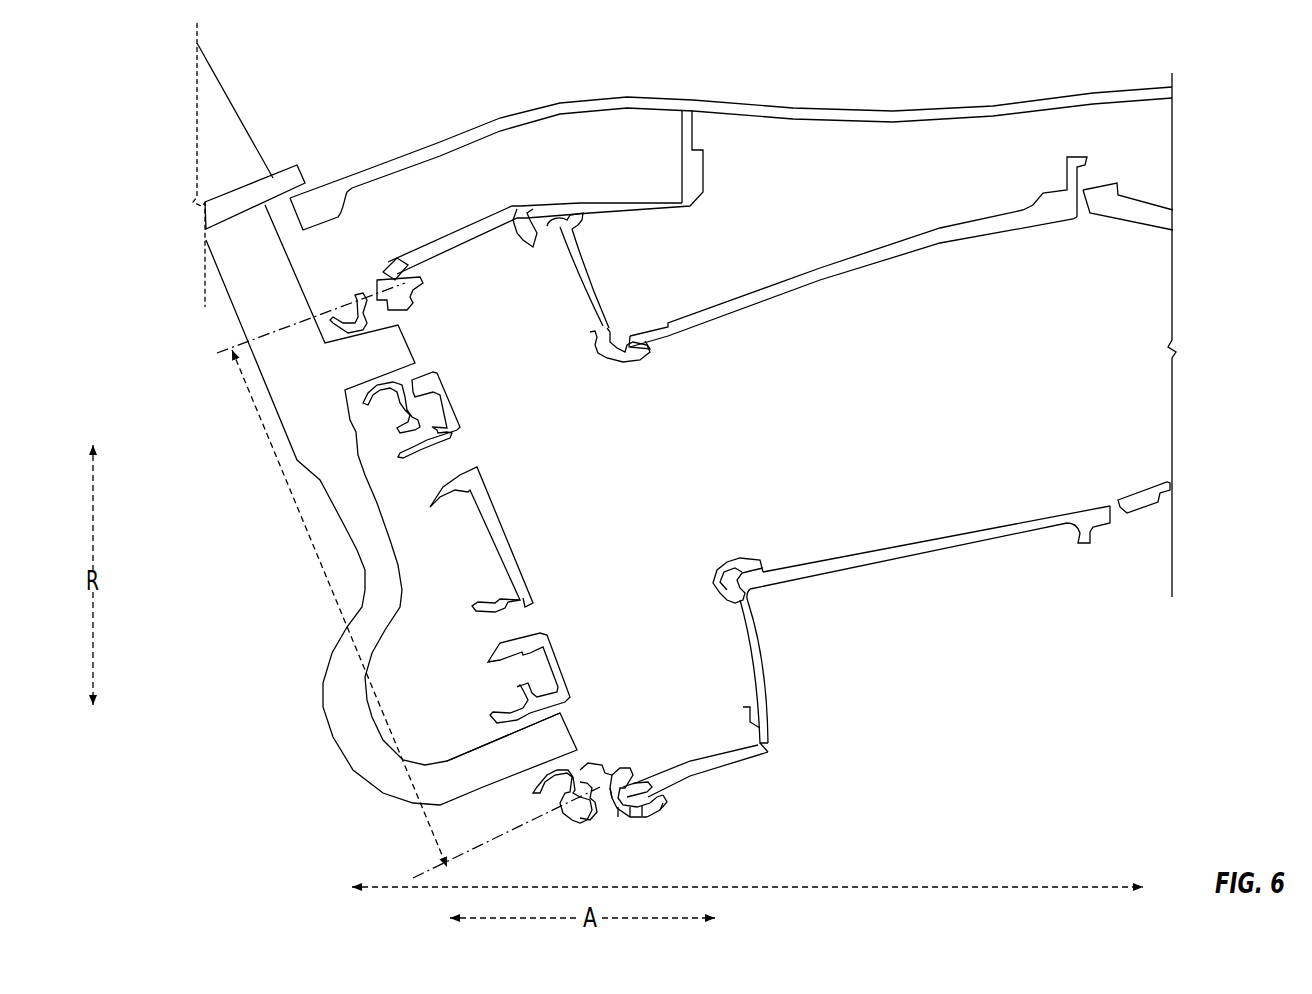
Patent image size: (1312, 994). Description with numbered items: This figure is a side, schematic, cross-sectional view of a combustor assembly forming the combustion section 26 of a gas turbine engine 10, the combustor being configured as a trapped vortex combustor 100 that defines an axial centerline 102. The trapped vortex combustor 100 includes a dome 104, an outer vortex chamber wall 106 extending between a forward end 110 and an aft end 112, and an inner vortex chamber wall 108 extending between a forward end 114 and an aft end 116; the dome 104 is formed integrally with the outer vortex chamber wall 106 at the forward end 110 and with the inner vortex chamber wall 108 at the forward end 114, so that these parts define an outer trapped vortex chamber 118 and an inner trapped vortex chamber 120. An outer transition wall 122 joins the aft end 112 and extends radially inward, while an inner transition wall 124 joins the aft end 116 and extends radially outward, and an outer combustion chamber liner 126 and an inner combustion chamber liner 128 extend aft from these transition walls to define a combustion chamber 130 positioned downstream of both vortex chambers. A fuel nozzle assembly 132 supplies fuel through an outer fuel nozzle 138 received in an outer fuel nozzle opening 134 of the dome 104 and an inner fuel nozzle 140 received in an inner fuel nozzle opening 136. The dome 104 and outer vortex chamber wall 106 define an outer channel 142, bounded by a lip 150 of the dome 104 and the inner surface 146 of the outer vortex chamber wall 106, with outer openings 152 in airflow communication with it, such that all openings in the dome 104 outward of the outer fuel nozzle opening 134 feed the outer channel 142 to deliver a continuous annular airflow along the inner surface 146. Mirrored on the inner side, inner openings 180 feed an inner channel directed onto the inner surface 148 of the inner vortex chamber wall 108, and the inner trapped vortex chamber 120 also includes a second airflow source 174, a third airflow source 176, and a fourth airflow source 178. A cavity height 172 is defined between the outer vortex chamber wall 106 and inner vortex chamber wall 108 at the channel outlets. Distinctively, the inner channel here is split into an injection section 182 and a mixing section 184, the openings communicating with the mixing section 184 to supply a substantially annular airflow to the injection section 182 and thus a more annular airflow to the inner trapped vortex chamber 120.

The gas turbine engine 10 is at (966, 73).
The combustion section 26 is at (840, 85).
The trapped vortex combustor 100 is at (708, 137).
The axial centerline 102 is at (998, 884).
The dome 104 is at (491, 543).
The outer vortex chamber wall 106 is at (452, 232).
The inner vortex chamber wall 108 is at (693, 773).
The forward end 110 is at (421, 300).
The aft end 112 is at (519, 198).
The forward end 114 is at (634, 790).
The aft end 116 is at (716, 695).
The outer trapped vortex chamber 118 is at (551, 310).
The inner trapped vortex chamber 120 is at (745, 673).
The outer transition wall 122 is at (597, 272).
The inner transition wall 124 is at (774, 702).
The outer combustion chamber liner 126 is at (800, 272).
The inner combustion chamber liner 128 is at (931, 552).
The combustion chamber 130 is at (950, 424).
The fuel nozzle assembly 132 is at (240, 475).
The outer fuel nozzle opening 134 is at (450, 364).
The inner fuel nozzle opening 136 is at (591, 693).
The outer fuel nozzle 138 is at (367, 359).
The inner fuel nozzle 140 is at (535, 756).
The outer channel 142 is at (437, 257).
The inner surface 146 is at (486, 251).
The inner surface 148 is at (727, 743).
The lip 150 is at (421, 283).
The outer openings 152 is at (371, 280).
The cavity height 172 is at (337, 594).
The second airflow source 174 is at (779, 723).
The third airflow source 176 is at (757, 628).
The fourth airflow source 178 is at (556, 603).
The inner openings 180 is at (611, 833).
The injection section 182 is at (620, 777).
The mixing section 184 is at (651, 808).